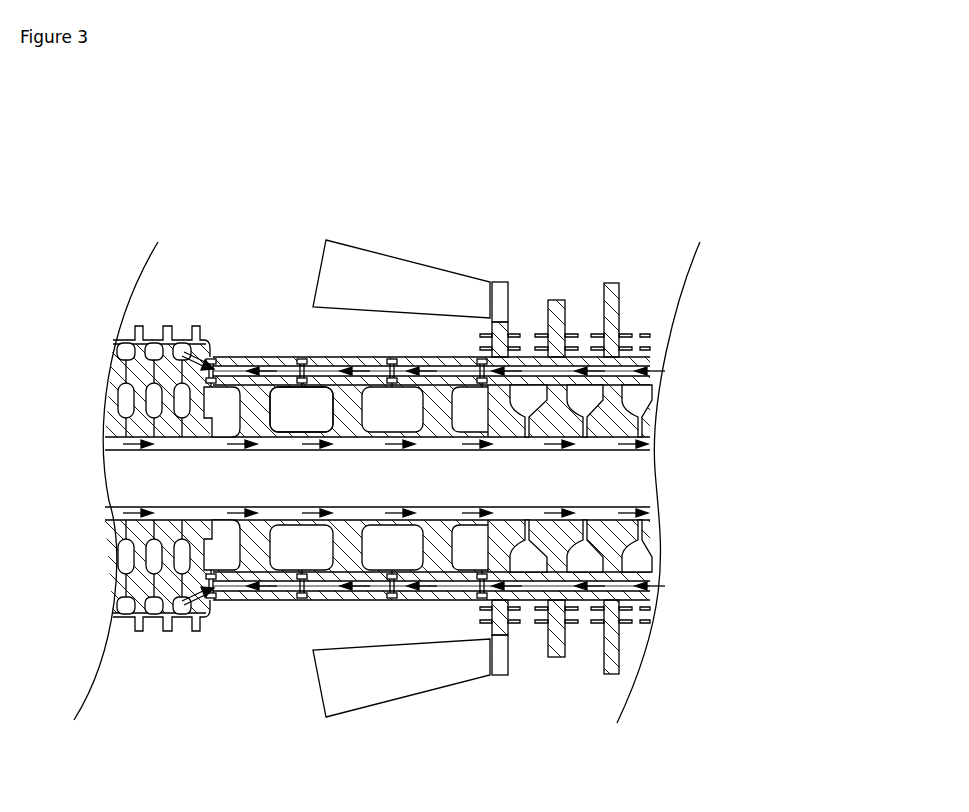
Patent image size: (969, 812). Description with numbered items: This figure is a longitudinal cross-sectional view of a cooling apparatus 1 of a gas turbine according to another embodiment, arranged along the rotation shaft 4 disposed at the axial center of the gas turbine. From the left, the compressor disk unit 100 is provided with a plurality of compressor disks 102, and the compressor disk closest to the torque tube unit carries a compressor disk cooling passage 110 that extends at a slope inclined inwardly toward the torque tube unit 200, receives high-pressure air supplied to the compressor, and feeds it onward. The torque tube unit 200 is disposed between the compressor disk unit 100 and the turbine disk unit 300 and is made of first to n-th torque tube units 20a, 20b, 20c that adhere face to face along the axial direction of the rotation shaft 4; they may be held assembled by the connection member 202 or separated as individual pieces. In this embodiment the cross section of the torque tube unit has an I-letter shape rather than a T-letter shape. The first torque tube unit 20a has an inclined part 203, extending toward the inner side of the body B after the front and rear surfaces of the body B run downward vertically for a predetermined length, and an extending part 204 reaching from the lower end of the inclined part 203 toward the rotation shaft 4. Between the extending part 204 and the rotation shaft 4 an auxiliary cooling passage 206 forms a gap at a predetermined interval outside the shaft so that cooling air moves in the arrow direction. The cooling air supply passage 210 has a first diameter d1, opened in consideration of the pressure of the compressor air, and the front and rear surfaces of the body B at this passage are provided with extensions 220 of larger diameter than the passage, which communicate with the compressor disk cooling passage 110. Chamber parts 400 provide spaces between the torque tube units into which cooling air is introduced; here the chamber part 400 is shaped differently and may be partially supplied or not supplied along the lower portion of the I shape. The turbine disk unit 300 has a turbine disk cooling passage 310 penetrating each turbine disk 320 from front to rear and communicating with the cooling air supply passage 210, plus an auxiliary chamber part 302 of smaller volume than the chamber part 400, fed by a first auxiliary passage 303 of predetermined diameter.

The cooling apparatus 1 is at (686, 166).
The compressor disk unit 100 is at (158, 318).
The compressor disk 102 is at (196, 343).
The compressor disk cooling passage 110 is at (208, 350).
The torque tube unit 200 is at (455, 184).
The first torque tube unit 20a is at (258, 352).
The second torque tube unit 20b is at (340, 352).
The n-th torque tube unit 20c is at (425, 352).
The connection member 202 is at (212, 388).
The inclined part 203 is at (225, 428).
The extending part 204 is at (247, 432).
The auxiliary cooling passage 206 is at (278, 442).
The cooling air supply passage 210 is at (241, 376).
The extension 220 is at (218, 358).
The turbine disk unit 300 is at (633, 279).
The auxiliary chamber part 302 is at (582, 393).
The first auxiliary passage 303 is at (643, 429).
The turbine disk cooling passage 310 is at (512, 393).
The turbine disk 320 is at (513, 352).
The chamber part 400 is at (318, 422).
The rotation shaft 4 is at (632, 483).
The body B is at (300, 357).
The first diameter d1 is at (269, 385).